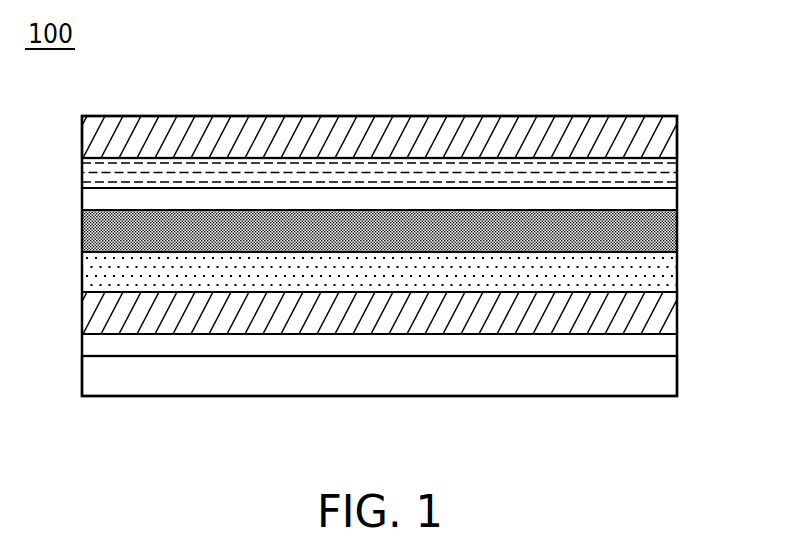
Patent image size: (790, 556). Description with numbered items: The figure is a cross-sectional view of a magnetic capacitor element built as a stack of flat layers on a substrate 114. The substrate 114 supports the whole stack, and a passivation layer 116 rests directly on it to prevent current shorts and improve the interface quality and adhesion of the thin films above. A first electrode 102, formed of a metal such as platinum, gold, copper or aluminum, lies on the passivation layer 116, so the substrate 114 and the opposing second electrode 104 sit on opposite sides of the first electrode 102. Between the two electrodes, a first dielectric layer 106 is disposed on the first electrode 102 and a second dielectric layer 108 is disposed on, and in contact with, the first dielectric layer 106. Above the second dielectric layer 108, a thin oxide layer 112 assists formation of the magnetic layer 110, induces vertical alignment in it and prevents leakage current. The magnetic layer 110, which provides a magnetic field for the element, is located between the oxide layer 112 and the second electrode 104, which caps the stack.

The first electrode 102 is at (672, 311).
The second electrode 104 is at (672, 137).
The first dielectric layer 106 is at (672, 271).
The second dielectric layer 108 is at (672, 230).
The magnetic layer 110 is at (672, 172).
The oxide layer 112 is at (672, 197).
The substrate 114 is at (672, 375).
The passivation layer 116 is at (672, 344).